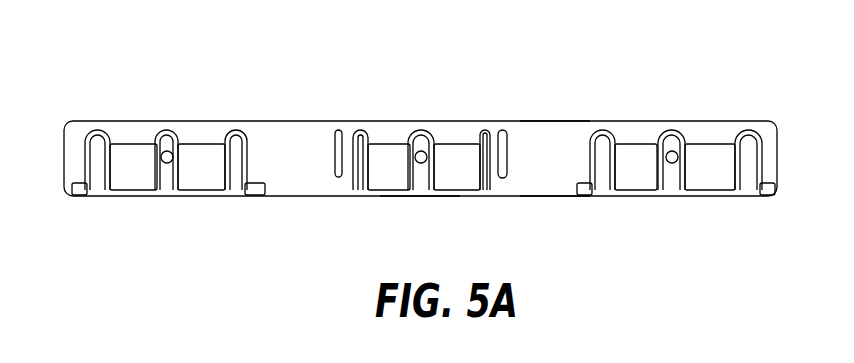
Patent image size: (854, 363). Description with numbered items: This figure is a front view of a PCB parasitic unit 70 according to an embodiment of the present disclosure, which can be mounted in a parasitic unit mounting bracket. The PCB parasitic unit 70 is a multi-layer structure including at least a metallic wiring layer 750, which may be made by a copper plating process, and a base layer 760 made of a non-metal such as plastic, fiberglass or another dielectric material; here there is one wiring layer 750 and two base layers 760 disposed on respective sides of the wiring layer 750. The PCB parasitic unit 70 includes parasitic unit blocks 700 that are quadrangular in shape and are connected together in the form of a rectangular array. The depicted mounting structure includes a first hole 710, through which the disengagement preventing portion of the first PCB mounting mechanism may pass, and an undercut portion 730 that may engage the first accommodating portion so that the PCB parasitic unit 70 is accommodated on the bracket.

The PCB parasitic unit 70 is at (220, 111).
The parasitic unit block 700 is at (130, 130).
The first hole 710 is at (425, 155).
The undercut portion 730 is at (420, 196).
The wiring layer 750 is at (505, 137).
The base layer 760 is at (570, 137).